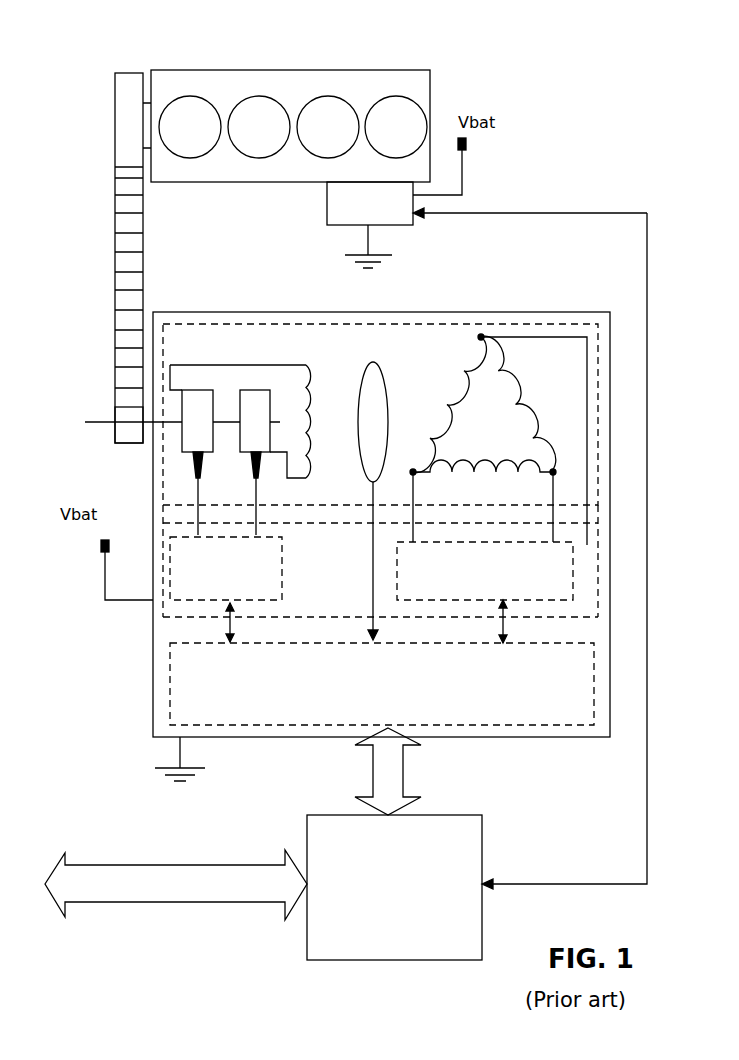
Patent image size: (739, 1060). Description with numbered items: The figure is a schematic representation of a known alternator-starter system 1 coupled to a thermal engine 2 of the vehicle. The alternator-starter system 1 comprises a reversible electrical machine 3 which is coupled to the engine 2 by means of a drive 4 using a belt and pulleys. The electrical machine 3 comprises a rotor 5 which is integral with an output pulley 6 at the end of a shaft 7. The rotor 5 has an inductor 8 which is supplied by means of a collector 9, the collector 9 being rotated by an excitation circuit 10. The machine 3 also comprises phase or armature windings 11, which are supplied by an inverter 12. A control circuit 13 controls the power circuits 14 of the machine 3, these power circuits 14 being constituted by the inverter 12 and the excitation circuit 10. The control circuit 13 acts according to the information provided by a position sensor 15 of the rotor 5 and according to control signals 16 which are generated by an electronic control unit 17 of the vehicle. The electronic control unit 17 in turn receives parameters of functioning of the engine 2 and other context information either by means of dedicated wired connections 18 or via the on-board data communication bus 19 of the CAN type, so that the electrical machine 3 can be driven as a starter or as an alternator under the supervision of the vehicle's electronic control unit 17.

The alternator-starter system 1 is at (153, 690).
The thermal engine 2 is at (222, 85).
The reversible electrical machine 3 is at (545, 320).
The drive 4 is at (130, 265).
The rotor 5 is at (210, 340).
The output pulley 6 is at (127, 420).
The shaft 7 is at (163, 458).
The inductor 8 is at (318, 365).
The collector 9 is at (262, 408).
The excitation circuit 10 is at (232, 578).
The phase or armature windings 11 is at (530, 435).
The inverter 12 is at (555, 597).
The control circuit 13 is at (562, 703).
The power circuits 14 is at (573, 613).
The position sensor 15 is at (378, 360).
The control signals 16 is at (390, 785).
The electronic control unit 17 is at (320, 943).
The dedicated wired connections 18 is at (540, 880).
The on-board data communication bus 19 is at (111, 888).